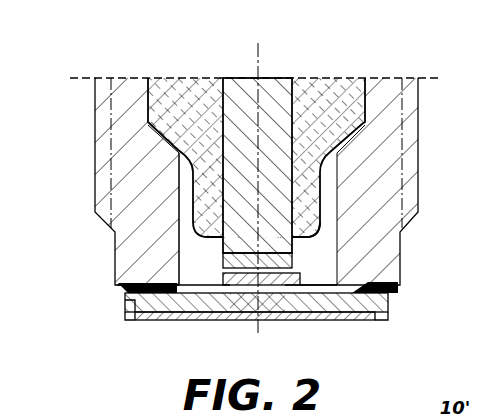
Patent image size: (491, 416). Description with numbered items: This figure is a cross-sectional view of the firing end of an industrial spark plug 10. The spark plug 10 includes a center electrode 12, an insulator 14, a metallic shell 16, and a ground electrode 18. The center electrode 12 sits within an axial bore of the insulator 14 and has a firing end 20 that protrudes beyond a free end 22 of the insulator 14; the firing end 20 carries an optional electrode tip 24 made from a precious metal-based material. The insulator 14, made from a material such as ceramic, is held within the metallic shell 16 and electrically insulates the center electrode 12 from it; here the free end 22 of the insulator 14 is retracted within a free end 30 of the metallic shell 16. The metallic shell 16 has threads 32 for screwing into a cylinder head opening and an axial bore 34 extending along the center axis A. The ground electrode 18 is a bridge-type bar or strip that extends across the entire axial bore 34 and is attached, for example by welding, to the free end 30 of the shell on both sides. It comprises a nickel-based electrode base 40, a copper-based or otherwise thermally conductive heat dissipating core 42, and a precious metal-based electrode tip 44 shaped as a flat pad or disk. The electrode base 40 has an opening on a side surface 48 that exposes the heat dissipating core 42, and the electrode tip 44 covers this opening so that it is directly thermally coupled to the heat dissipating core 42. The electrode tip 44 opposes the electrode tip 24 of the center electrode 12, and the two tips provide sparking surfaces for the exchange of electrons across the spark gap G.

The spark plug 10 is at (112, 56).
The center electrode 12 is at (286, 100).
The insulator 14 is at (344, 100).
The metallic shell 16 is at (386, 117).
The ground electrode 18 is at (368, 322).
The firing end 20 is at (212, 270).
The free end 22 is at (313, 232).
The electrode tip 24 is at (292, 265).
The free end 30 is at (172, 282).
The threads 32 is at (411, 176).
The axial bore 34 is at (179, 223).
The electrode base 40 is at (125, 313).
The heat dissipating core 42 is at (293, 304).
The electrode tip 44 is at (293, 276).
The side surface 48 is at (310, 277).
The center axis A is at (261, 57).
The spark gap G is at (200, 261).